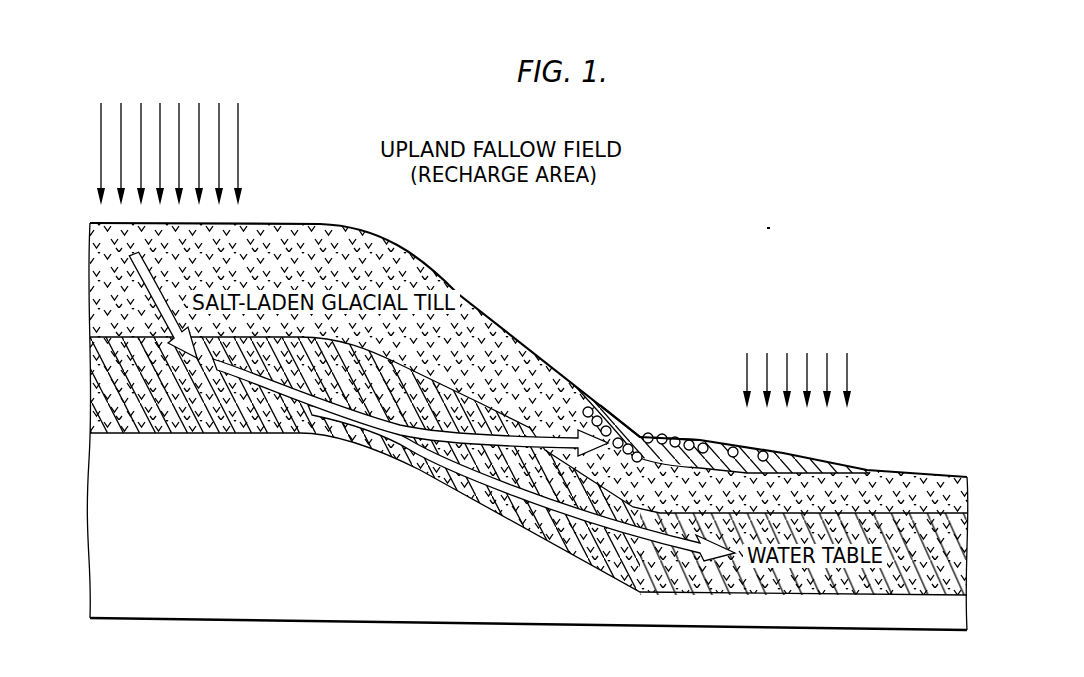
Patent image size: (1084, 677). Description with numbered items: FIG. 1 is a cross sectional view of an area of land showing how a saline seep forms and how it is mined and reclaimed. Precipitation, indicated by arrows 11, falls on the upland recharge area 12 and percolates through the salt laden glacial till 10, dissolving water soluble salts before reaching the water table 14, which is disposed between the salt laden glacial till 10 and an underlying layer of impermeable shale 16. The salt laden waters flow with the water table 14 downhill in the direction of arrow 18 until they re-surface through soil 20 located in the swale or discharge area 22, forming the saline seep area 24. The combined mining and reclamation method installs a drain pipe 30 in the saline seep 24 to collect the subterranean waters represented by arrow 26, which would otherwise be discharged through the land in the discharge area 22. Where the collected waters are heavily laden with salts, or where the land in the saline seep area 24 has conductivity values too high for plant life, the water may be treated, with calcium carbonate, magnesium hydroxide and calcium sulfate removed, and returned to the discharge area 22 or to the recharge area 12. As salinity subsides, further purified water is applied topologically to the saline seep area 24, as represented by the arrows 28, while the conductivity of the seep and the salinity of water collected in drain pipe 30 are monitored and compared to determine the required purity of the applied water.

The salt laden glacial till 10 is at (416, 268).
The precipitation 11 is at (220, 128).
The upland recharge area 12 is at (291, 222).
The water table 14 is at (128, 422).
The impermeable shale 16 is at (236, 510).
The arrow 18 is at (379, 449).
The soil 20 is at (626, 436).
The swale or discharge area 22 is at (662, 395).
The saline seep area 24 is at (870, 472).
The arrow 26 is at (548, 433).
The arrows 28 is at (849, 388).
The drain pipe 30 is at (648, 436).